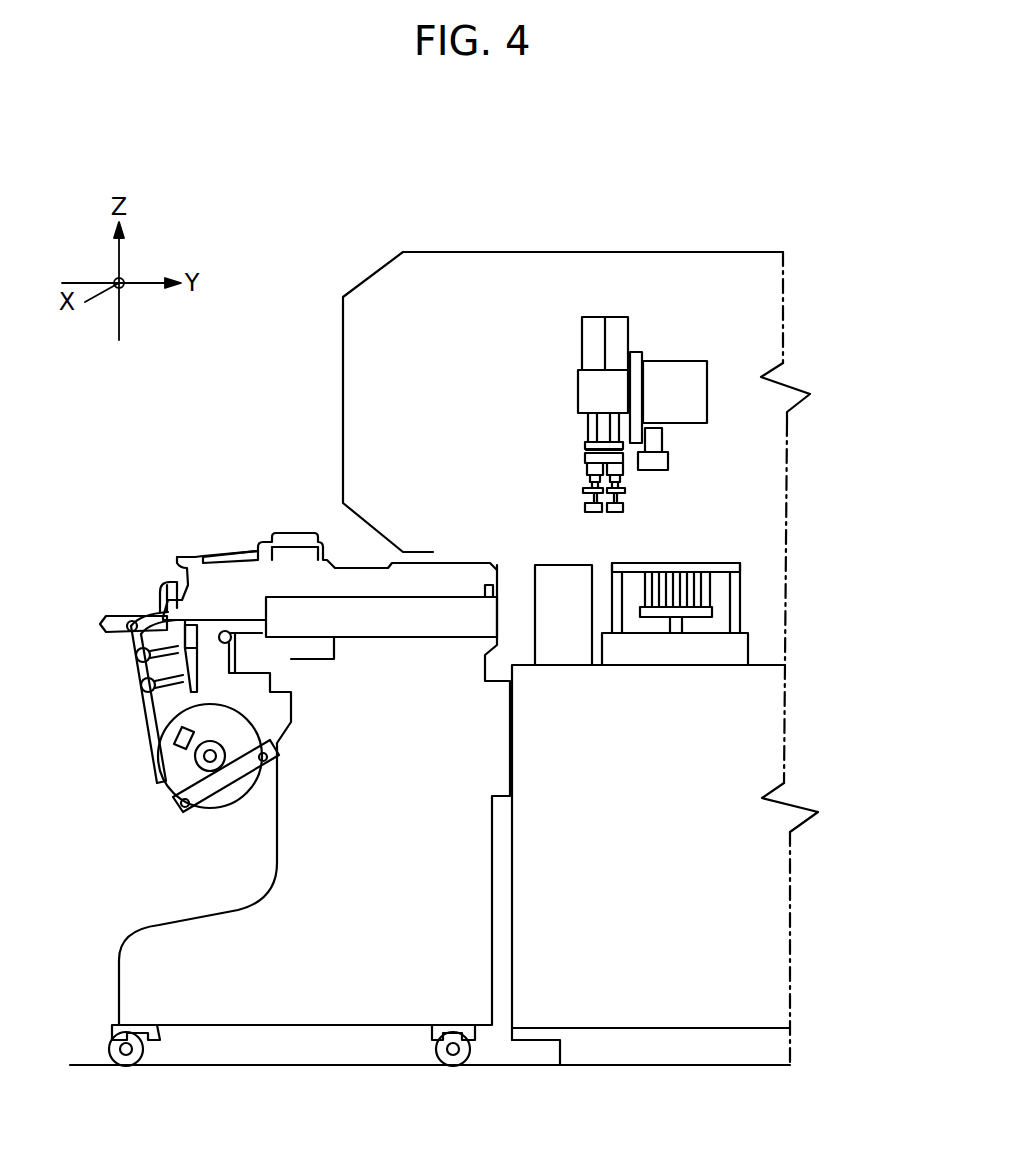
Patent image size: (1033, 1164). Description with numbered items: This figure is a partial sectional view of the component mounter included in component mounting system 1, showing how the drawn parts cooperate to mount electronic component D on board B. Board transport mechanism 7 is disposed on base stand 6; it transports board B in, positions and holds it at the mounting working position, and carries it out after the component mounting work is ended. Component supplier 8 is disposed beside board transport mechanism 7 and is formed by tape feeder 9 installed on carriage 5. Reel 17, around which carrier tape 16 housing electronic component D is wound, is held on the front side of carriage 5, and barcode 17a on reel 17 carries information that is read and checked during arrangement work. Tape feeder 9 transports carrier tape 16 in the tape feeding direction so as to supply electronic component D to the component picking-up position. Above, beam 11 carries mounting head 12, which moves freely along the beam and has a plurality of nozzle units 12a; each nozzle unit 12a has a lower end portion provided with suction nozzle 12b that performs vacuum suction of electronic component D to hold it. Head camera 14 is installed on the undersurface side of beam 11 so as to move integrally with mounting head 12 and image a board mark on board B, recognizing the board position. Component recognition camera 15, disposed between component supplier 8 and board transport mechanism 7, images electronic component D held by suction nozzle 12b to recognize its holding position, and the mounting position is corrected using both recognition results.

The component mounting system 1 is at (406, 189).
The carriage 5 is at (142, 960).
The base stand 6 is at (745, 696).
The board transport mechanism 7 is at (731, 585).
The component supplier 8 is at (279, 562).
The tape feeder 9 is at (247, 573).
The beam 11 is at (680, 377).
The mounting head 12 is at (731, 353).
The nozzle unit 12a is at (593, 325).
The suction nozzle 12b is at (622, 498).
The head camera 14 is at (653, 460).
The component recognition camera 15 is at (557, 650).
The carrier tape 16 is at (160, 719).
The reel 17 is at (154, 758).
The barcode 17a is at (178, 735).
The board B is at (693, 570).
The electronic component D is at (623, 507).